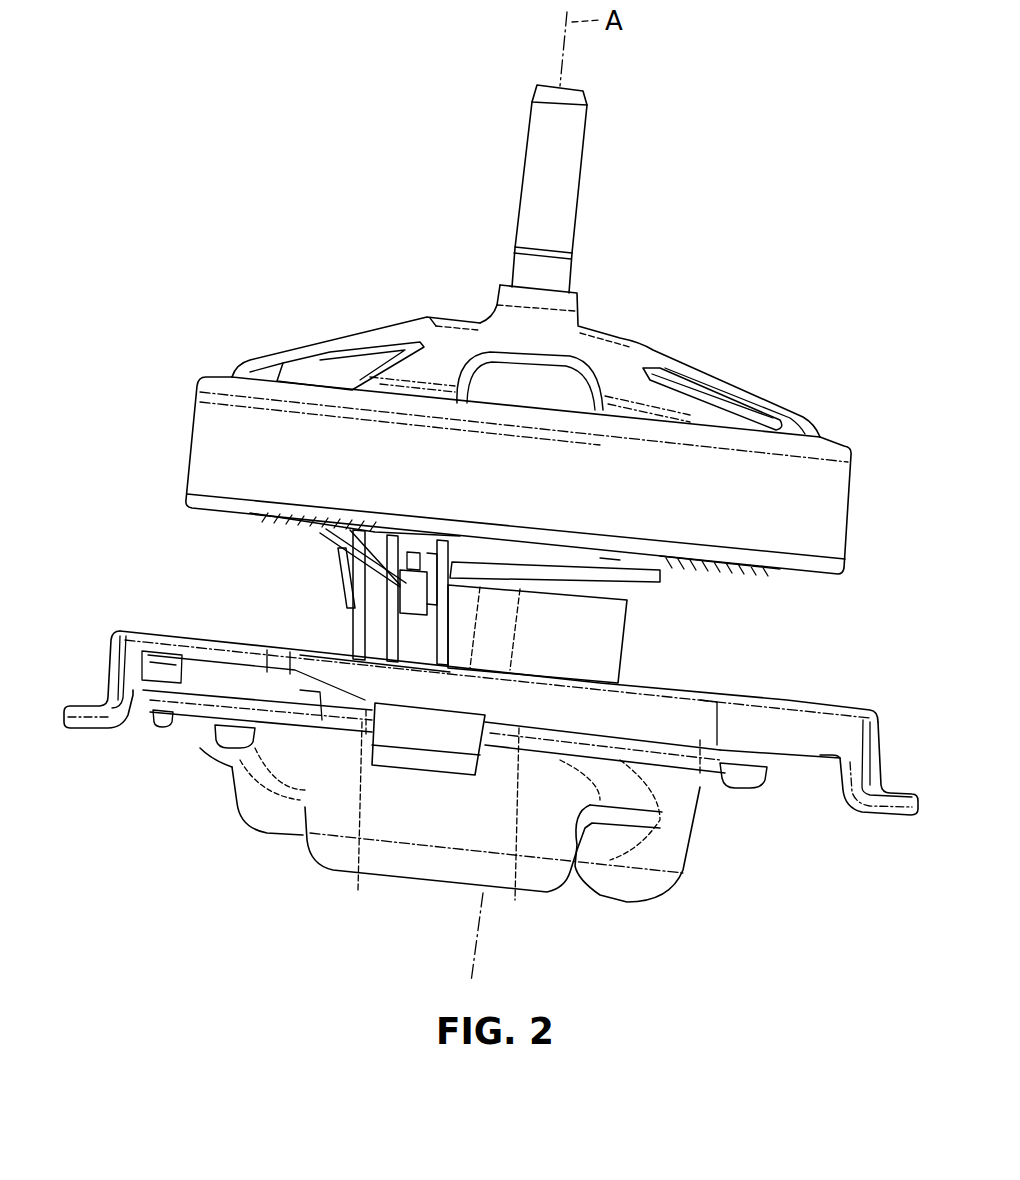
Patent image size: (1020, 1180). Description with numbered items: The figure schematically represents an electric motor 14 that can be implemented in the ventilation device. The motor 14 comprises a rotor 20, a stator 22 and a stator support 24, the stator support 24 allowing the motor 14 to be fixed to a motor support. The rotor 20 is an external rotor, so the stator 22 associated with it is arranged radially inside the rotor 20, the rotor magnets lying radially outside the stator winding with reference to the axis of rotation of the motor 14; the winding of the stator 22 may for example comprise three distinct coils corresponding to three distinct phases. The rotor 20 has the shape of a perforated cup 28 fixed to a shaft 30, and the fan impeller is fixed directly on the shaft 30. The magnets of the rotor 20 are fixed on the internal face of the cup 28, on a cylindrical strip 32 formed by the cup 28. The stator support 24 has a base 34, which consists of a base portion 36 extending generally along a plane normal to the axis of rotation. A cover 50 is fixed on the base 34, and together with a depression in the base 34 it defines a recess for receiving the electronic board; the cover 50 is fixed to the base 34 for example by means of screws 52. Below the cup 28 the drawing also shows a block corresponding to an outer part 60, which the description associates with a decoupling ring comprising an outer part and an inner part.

The motor 14 is at (218, 278).
The rotor 20 is at (376, 302).
The stator 22 is at (266, 543).
The stator support 24 is at (138, 600).
The perforated cup 28 is at (648, 355).
The shaft 30 is at (568, 150).
The cylindrical strip 32 is at (220, 432).
The base 34 is at (812, 681).
The base portion 36 is at (138, 668).
The cover 50 is at (387, 828).
The screws 52 is at (237, 730).
The outer part 60 is at (610, 640).